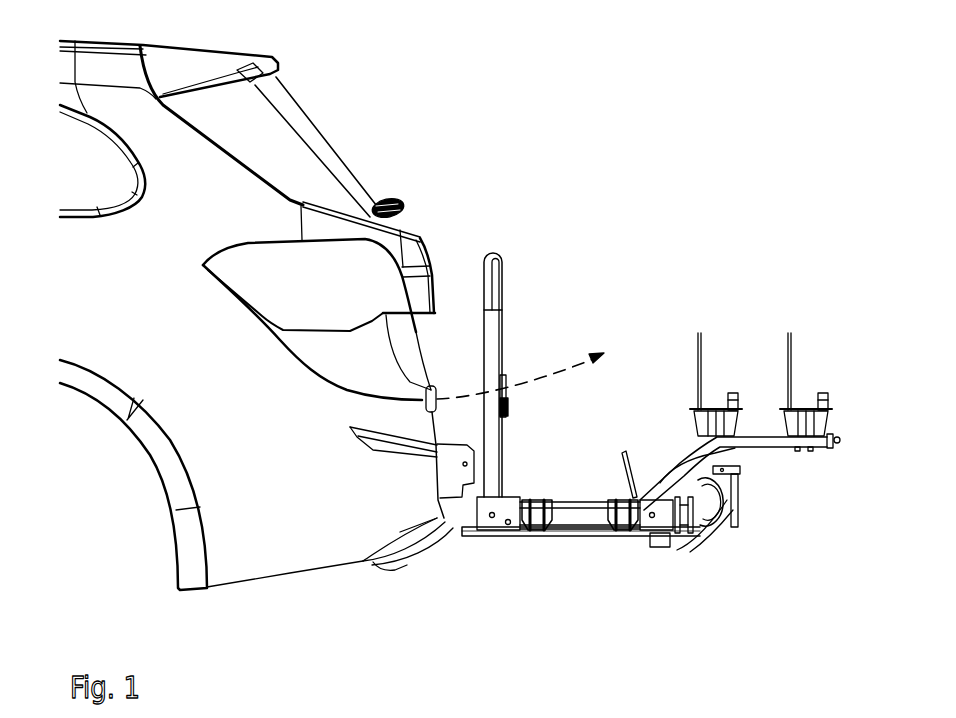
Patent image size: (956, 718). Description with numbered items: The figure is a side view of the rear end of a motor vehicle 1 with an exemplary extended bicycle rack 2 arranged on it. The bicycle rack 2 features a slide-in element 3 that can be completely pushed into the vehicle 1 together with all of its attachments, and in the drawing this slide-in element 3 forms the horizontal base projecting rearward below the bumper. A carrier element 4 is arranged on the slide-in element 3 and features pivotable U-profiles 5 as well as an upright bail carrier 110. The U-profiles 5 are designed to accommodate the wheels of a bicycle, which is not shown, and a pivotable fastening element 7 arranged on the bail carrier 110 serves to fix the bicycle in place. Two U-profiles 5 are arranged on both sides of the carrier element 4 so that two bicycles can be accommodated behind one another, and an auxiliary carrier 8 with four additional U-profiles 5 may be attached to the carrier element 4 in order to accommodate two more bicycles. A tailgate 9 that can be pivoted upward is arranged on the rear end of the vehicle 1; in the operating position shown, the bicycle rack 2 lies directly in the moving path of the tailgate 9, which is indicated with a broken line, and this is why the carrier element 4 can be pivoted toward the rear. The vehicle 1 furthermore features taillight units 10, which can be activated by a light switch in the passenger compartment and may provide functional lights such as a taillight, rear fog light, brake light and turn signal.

The motor vehicle 1 is at (381, 121).
The bicycle rack 2 is at (651, 409).
The slide-in element 3 is at (588, 533).
The carrier element 4 is at (617, 440).
The U-profiles 5 is at (540, 533).
The fastening element 7 is at (508, 408).
The auxiliary carrier 8 is at (750, 443).
The tailgate 9 is at (424, 242).
The taillight units 10 is at (333, 282).
The bail carrier 110 is at (493, 317).